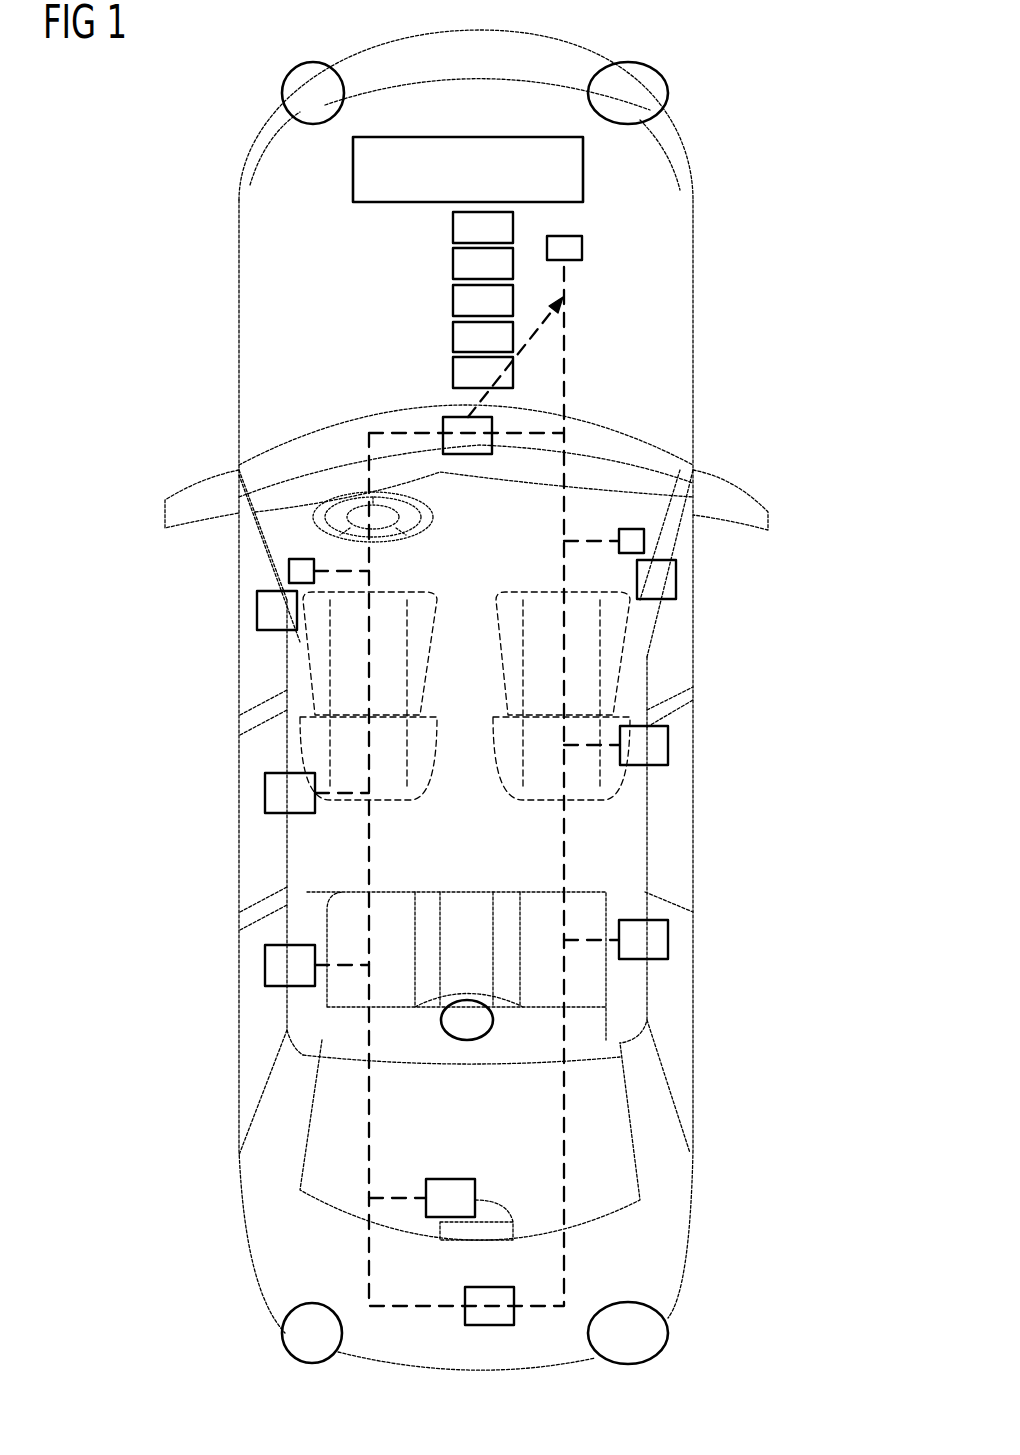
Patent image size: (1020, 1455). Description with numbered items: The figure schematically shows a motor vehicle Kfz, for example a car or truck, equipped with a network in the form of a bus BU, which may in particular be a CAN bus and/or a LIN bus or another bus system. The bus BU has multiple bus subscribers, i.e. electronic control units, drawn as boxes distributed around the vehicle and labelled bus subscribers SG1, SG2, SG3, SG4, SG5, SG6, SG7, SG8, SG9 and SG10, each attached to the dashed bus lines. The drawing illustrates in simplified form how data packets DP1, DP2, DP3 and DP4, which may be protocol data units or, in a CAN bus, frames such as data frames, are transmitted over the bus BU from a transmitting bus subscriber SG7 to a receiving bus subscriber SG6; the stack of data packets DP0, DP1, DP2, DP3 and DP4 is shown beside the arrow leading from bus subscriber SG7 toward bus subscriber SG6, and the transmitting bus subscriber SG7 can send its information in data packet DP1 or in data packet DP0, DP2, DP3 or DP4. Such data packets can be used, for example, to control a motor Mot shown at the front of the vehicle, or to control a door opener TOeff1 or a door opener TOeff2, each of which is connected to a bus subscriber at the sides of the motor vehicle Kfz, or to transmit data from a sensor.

The motor vehicle Kfz is at (239, 297).
The motor Mot is at (583, 170).
The bus BU is at (564, 1165).
The data packet DP0 is at (483, 228).
The data packet DP1 is at (483, 264).
The data packet DP2 is at (483, 301).
The data packet DP3 is at (483, 337).
The data packet DP4 is at (483, 373).
The bus subscriber SG1 is at (289, 571).
The bus subscriber SG2 is at (265, 793).
The bus subscriber SG3 is at (265, 965).
The bus subscriber SG4 is at (450, 1179).
The bus subscriber SG5 is at (490, 1287).
The receiving bus subscriber SG6 is at (582, 248).
The transmitting bus subscriber SG7 is at (492, 423).
The bus subscriber SG8 is at (644, 541).
The bus subscriber SG9 is at (668, 745).
The bus subscriber SG10 is at (668, 940).
The door opener TOeff1 is at (257, 608).
The door opener TOeff2 is at (676, 580).